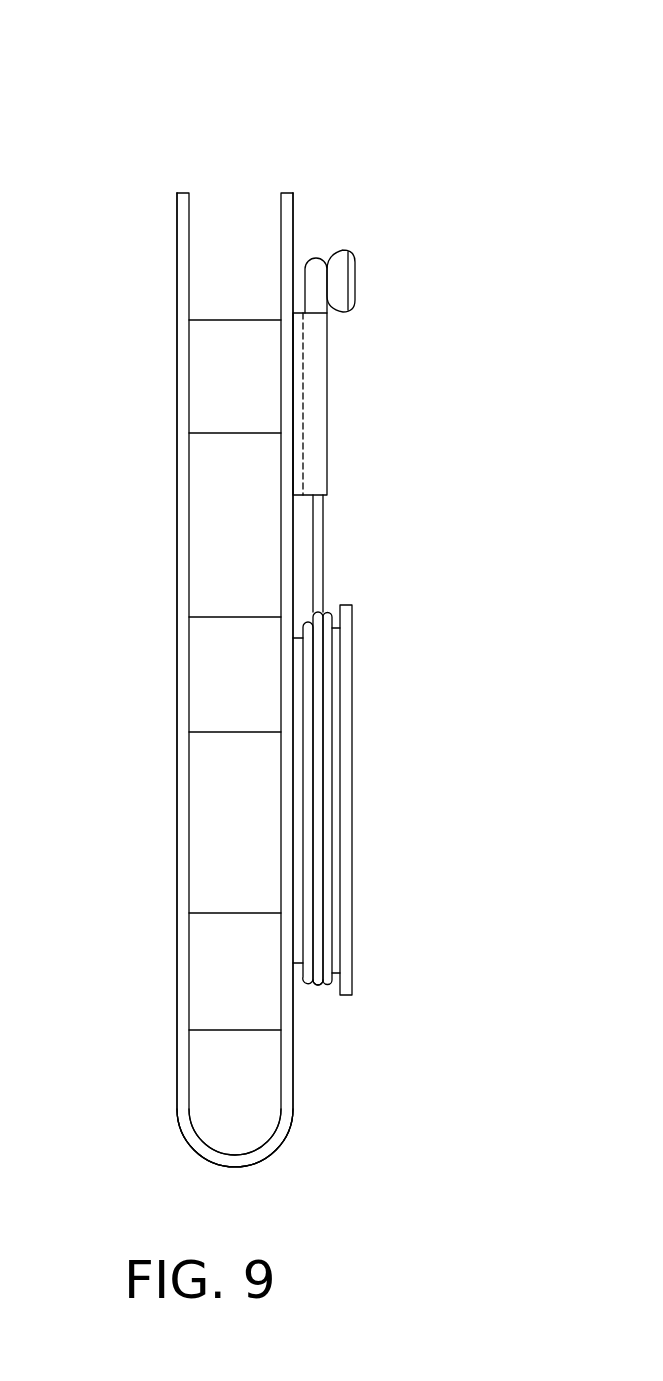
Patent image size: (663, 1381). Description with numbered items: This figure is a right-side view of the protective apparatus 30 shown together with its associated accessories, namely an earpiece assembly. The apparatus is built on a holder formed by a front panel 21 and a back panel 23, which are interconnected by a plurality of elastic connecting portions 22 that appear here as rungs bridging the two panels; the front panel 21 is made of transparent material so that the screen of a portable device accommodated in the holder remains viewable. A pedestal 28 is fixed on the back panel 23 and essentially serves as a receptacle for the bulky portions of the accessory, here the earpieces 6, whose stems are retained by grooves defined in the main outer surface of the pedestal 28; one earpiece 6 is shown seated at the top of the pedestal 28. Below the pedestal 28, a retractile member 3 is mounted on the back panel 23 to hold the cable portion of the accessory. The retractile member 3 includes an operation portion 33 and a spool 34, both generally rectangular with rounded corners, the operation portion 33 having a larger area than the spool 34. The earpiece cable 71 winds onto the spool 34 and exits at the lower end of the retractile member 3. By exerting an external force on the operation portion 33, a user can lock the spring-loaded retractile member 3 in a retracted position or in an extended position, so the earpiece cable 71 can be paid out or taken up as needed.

The protective apparatus 30 is at (236, 27).
The front panel 21 is at (187, 248).
The elastic connecting portions 22 is at (235, 688).
The back panel 23 is at (285, 1062).
The earpiece 6 is at (350, 278).
The pedestal 28 is at (315, 370).
The retractile member 3 is at (437, 772).
The operation portion 33 is at (347, 807).
The spool 34 is at (335, 903).
The earpiece cable 71 is at (317, 987).